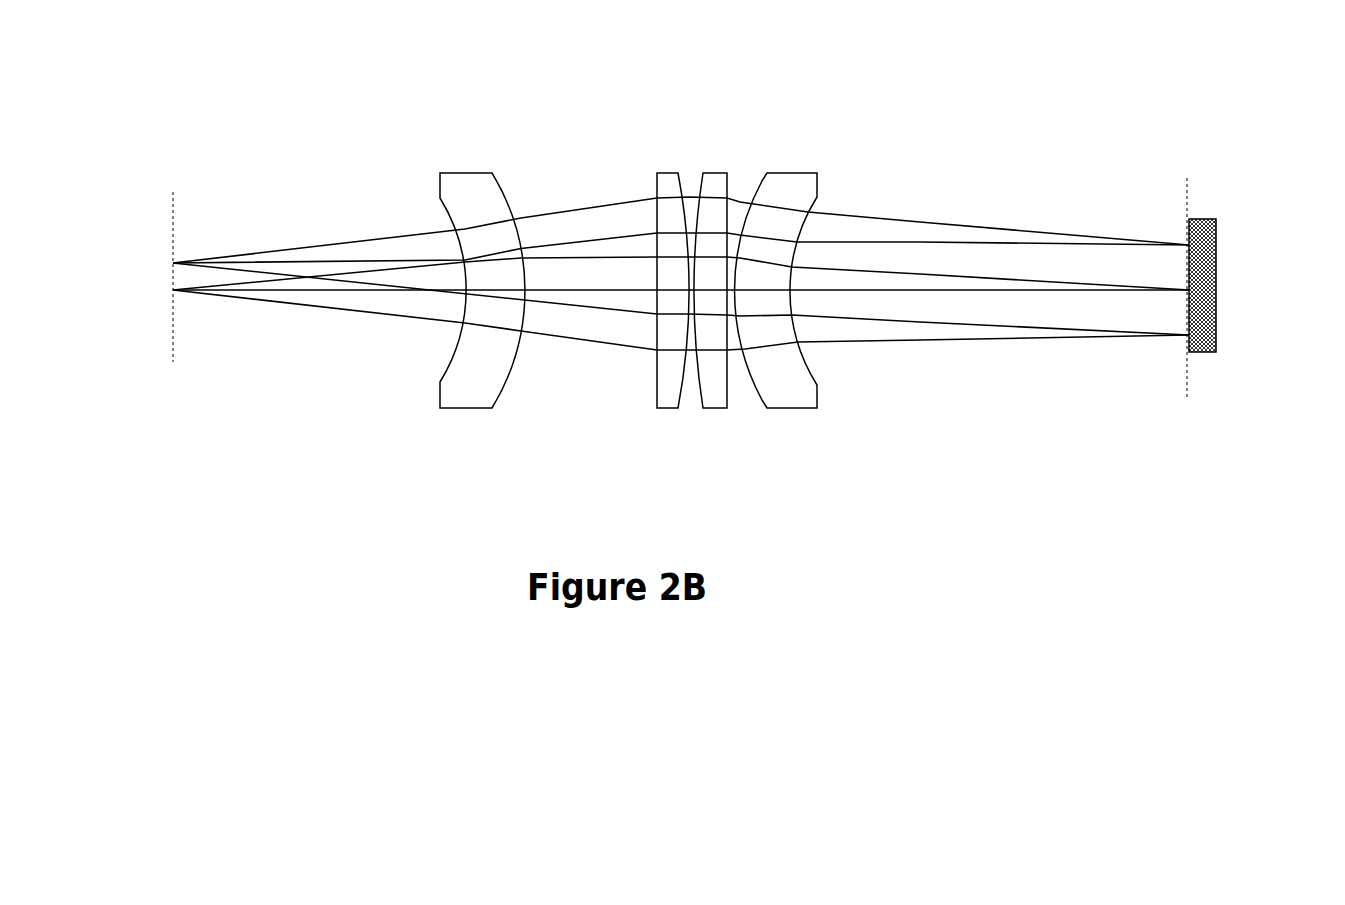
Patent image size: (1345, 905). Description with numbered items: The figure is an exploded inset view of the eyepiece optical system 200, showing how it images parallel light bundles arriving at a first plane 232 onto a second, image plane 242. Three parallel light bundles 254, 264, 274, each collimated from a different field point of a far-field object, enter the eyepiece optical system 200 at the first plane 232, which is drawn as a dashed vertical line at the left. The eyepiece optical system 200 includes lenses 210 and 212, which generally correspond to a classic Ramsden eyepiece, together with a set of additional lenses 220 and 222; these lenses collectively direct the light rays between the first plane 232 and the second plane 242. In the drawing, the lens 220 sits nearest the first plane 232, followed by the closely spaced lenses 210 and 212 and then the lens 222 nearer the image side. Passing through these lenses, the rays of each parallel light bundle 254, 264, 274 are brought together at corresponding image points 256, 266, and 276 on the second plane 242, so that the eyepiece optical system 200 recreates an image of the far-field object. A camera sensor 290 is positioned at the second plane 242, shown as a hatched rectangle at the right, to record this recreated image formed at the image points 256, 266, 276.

The eyepiece optical system 200 is at (600, 127).
The lens 210 is at (662, 410).
The lens 212 is at (723, 410).
The additional lens 220 is at (468, 410).
The additional lens 222 is at (797, 410).
The first plane 232 is at (173, 373).
The second plane 242 is at (1188, 403).
The parallel light bundle 254 is at (430, 307).
The image point 256 is at (1188, 335).
The parallel light bundle 264 is at (407, 278).
The image point 266 is at (1189, 290).
The parallel light bundle 274 is at (428, 251).
The image point 276 is at (1188, 245).
The camera sensor 290 is at (1217, 232).